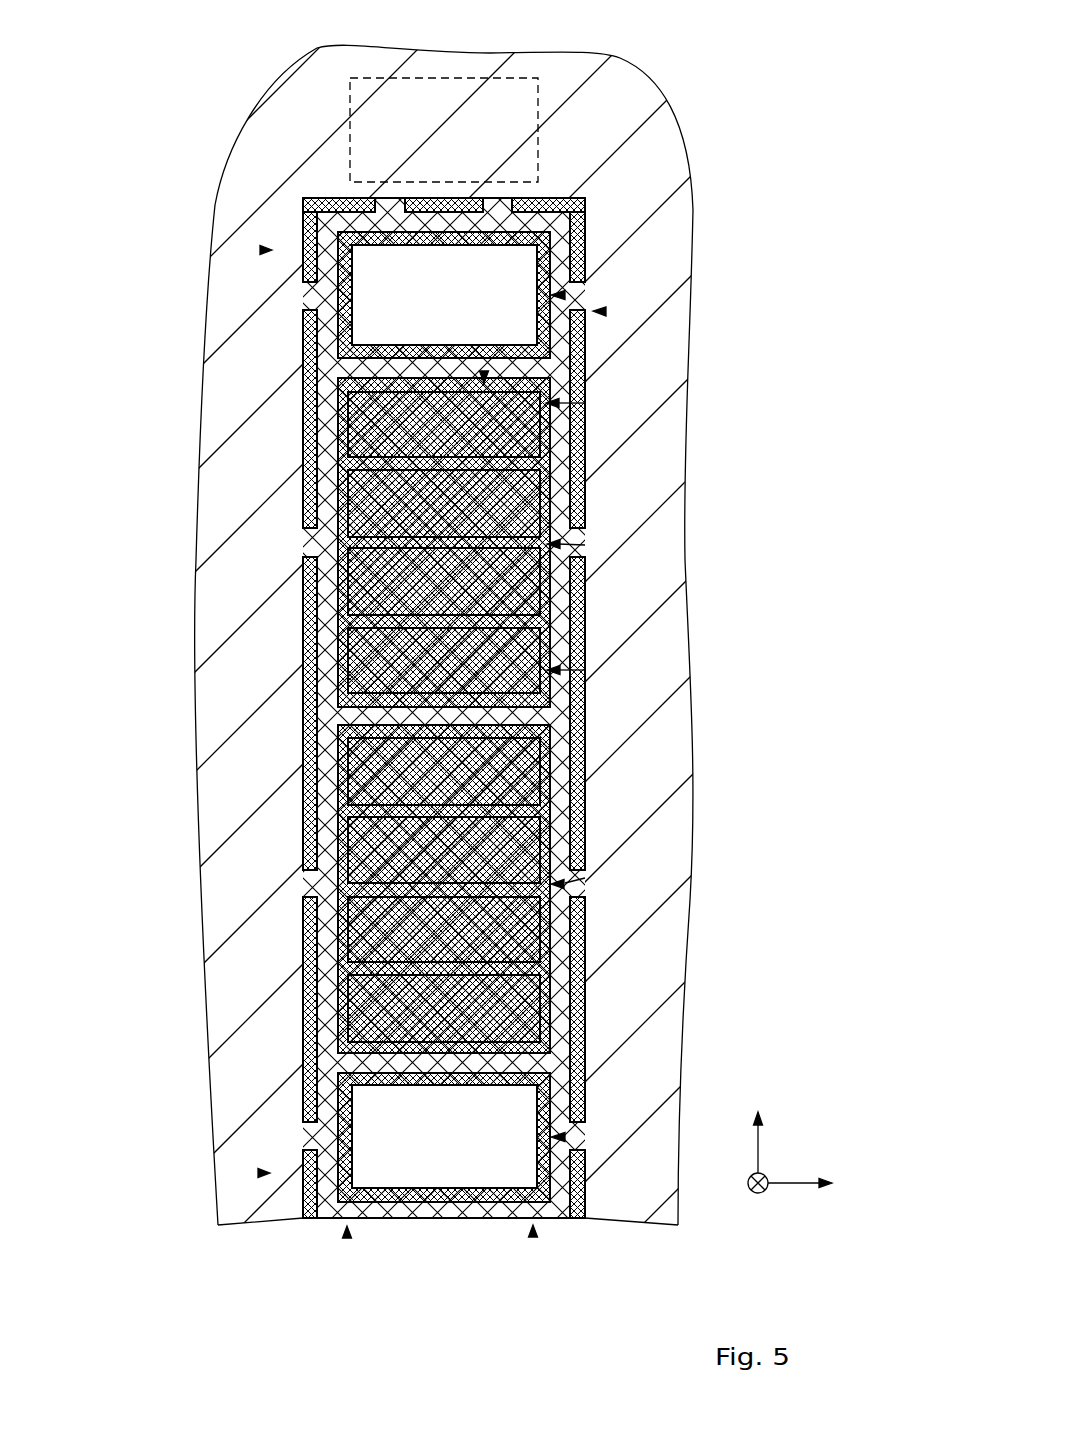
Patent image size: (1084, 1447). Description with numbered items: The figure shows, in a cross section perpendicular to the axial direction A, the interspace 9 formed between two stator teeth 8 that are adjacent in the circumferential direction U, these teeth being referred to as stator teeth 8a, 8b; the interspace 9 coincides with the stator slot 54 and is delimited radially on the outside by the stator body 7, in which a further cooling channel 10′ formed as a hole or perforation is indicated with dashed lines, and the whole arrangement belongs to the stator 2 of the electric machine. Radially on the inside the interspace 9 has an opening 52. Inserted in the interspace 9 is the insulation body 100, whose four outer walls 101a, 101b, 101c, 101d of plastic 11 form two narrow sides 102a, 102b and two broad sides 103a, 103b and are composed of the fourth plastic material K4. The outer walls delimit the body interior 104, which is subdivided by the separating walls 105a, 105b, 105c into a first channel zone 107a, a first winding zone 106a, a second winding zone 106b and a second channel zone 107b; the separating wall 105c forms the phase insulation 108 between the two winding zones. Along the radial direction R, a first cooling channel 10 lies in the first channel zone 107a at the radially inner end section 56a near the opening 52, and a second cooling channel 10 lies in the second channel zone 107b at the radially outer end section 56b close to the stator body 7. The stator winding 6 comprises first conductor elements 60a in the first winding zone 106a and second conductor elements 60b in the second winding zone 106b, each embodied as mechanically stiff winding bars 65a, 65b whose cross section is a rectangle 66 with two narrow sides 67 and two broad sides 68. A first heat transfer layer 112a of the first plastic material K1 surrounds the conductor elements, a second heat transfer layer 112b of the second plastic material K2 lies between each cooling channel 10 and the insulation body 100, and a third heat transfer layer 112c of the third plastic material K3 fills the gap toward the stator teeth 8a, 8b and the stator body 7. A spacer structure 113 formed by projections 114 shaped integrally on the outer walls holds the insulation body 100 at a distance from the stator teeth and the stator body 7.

The vehicle body / housing 2 is at (542, 634).
The stator body 7 is at (663, 110).
The stator teeth 8 is at (443, 626).
The stator tooth 8a is at (139, 642).
The stator tooth 8b is at (747, 610).
The interspace 9 is at (362, 1290).
The stator slot 54 is at (347, 1238).
The cooling channel 10 is at (454, 282).
The further cooling channel 10′ is at (445, 90).
The plastic 11 is at (443, 222).
The opening 52 is at (394, 1219).
The radially inner end section 56a is at (260, 1173).
The radially outer end section 56b is at (262, 250).
The stator winding 6 is at (485, 372).
The first conductor elements 60a is at (444, 890).
The second conductor elements 60b is at (444, 542).
The winding bars 65a is at (485, 783).
The winding bars 65b is at (485, 436).
The rectangle 66 is at (585, 403).
The narrow sides 67 is at (303, 423).
The broad sides 68 is at (400, 380).
The insulation body 100 is at (581, 1290).
The fourth plastic material K4 is at (533, 1237).
The outer wall 101a is at (443, 1252).
The narrow side 102a is at (440, 1208).
The outer wall 101b is at (444, 159).
The narrow side 102b is at (441, 198).
The outer wall 101c is at (196, 1009).
The broad side 103a is at (303, 992).
The outer wall 101d is at (687, 1009).
The broad side 103b is at (585, 986).
The body interior 104 is at (585, 670).
The first separating wall 105a is at (389, 1067).
The second separating wall 105b is at (453, 372).
The separating wall 105c is at (561, 717).
The phase insulation 108 is at (520, 715).
The first winding zone 106a is at (585, 878).
The second winding zone 106b is at (585, 545).
The first channel zone 107a is at (568, 1137).
The second channel zone 107b is at (568, 295).
The first heat transfer layer 112a is at (318, 713).
The first plastic material K1 is at (303, 578).
The second heat transfer layer 112b is at (318, 715).
The second plastic material K2 is at (303, 323).
The third heat transfer layer 112c is at (315, 698).
The third plastic material K3 is at (303, 214).
The spacer structure 113 is at (608, 312).
The projections 114 is at (382, 198).
The radial direction R is at (762, 1148).
The circumferential direction U is at (792, 1190).
The axial direction A is at (755, 1195).